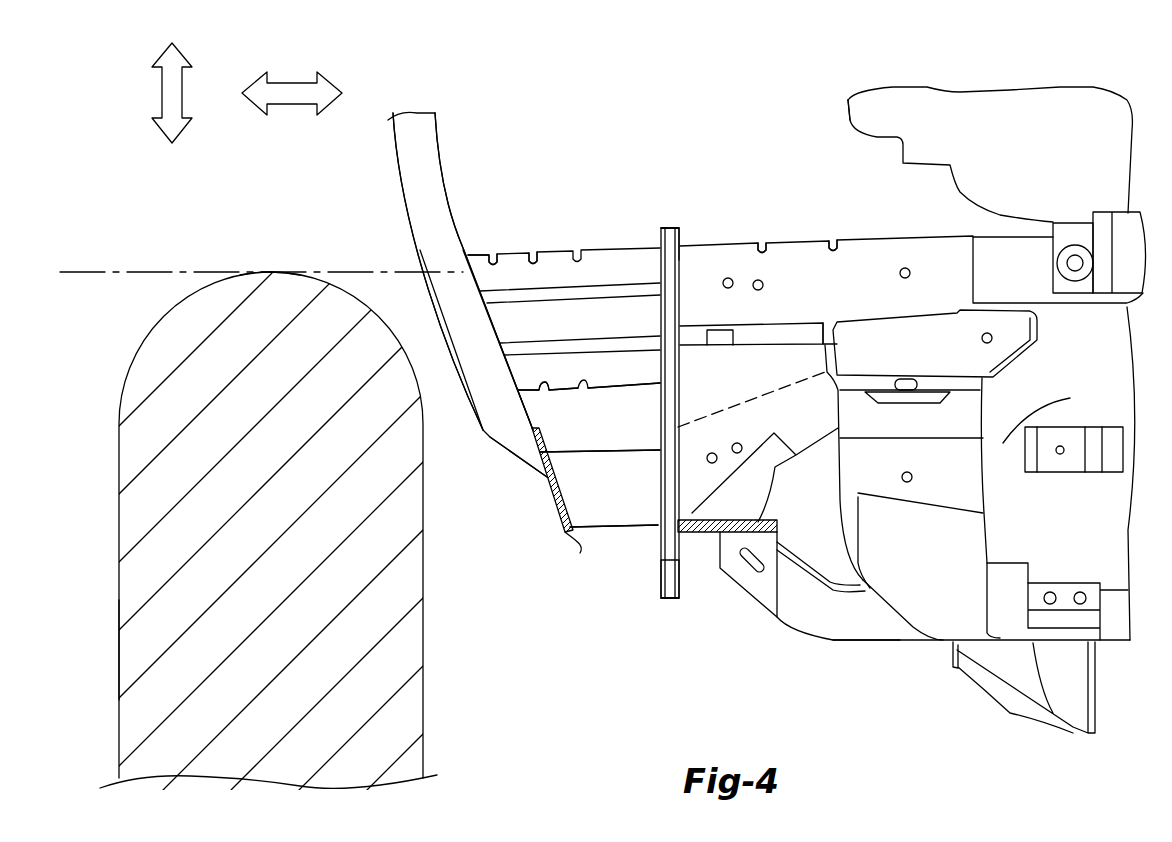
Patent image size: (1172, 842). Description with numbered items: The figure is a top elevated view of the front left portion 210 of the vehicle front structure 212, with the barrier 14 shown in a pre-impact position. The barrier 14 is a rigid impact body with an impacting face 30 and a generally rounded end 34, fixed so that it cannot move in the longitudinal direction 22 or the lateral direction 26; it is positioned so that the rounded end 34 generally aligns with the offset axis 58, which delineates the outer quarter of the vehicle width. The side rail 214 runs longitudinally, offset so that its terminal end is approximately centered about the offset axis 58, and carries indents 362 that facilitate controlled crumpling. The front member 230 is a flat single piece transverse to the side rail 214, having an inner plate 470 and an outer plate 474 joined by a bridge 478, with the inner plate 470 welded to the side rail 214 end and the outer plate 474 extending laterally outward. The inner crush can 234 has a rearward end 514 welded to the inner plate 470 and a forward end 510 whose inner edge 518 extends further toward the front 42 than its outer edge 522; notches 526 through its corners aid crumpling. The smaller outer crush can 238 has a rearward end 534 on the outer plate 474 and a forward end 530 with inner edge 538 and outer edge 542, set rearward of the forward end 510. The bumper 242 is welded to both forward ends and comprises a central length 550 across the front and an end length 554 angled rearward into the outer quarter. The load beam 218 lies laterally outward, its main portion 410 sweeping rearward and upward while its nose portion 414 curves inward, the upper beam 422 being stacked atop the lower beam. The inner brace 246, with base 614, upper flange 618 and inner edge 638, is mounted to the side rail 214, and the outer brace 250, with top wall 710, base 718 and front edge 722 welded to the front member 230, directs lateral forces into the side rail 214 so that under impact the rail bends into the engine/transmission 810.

The barrier 14 is at (112, 635).
The longitudinal direction 22 is at (290, 80).
The lateral direction 26 is at (160, 92).
The impacting face 30 is at (425, 693).
The rounded end 34 is at (272, 272).
The front 42 is at (406, 190).
The offset axis 58 is at (82, 270).
The front left portion 210 is at (610, 98).
The vehicle front structure 212 is at (774, 82).
The side rail 214 is at (866, 228).
The load beam 218 is at (923, 650).
The front member 230 is at (673, 614).
The inner crush can 234 is at (590, 245).
The outer crush can 238 is at (603, 535).
The bumper 242 is at (403, 240).
The inner brace 246 is at (834, 327).
The outer brace 250 is at (824, 403).
The indents 362 is at (833, 240).
The main portion 410 is at (888, 640).
The nose portion 414 is at (820, 622).
The upper beam 422 is at (857, 627).
The inner plate 470 is at (660, 235).
The outer plate 474 is at (678, 578).
The bridge 478 is at (660, 443).
The forward end 510 is at (492, 333).
The rearward end 514 is at (679, 250).
The inner edge 518 is at (468, 255).
The outer edge 522 is at (517, 392).
The notches 526 is at (533, 255).
The forward end 530 is at (555, 512).
The rearward end 534 is at (672, 520).
The inner edge 538 is at (546, 478).
The outer edge 542 is at (582, 550).
The central length 550 is at (400, 155).
The end length 554 is at (477, 368).
The base 614 is at (705, 415).
The upper flange 618 is at (783, 335).
The inner edge 638 is at (713, 340).
The top wall 710 is at (785, 423).
The base 718 is at (820, 455).
The front edge 722 is at (660, 408).
The engine/transmission 810 is at (997, 110).